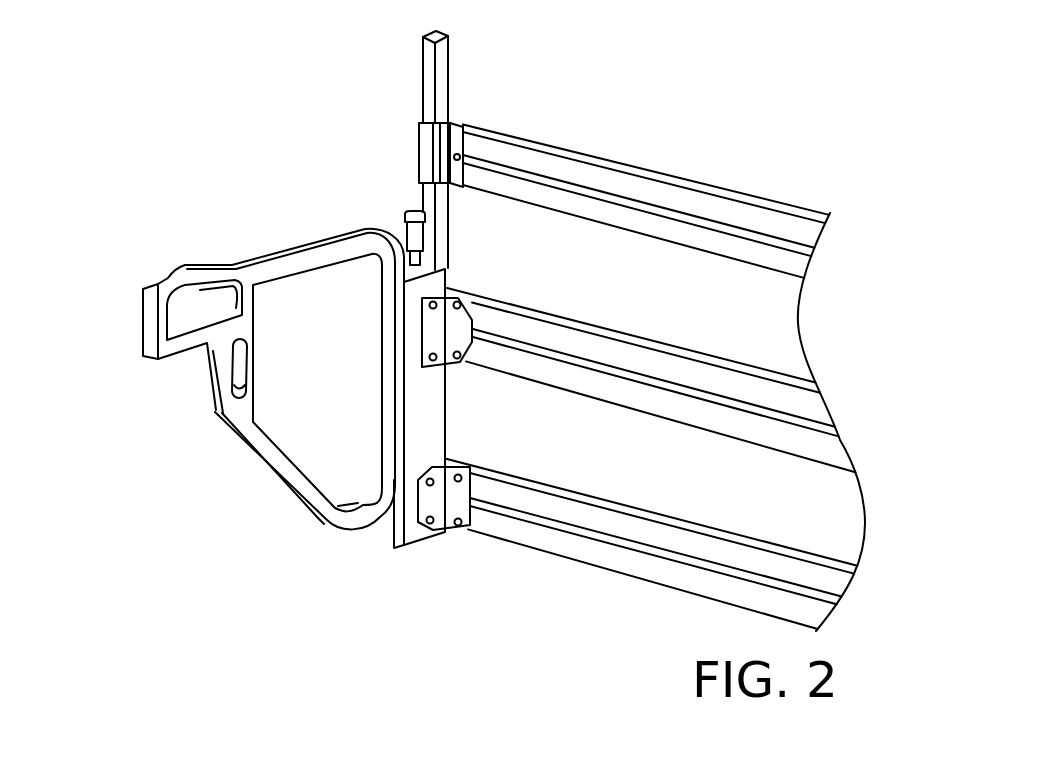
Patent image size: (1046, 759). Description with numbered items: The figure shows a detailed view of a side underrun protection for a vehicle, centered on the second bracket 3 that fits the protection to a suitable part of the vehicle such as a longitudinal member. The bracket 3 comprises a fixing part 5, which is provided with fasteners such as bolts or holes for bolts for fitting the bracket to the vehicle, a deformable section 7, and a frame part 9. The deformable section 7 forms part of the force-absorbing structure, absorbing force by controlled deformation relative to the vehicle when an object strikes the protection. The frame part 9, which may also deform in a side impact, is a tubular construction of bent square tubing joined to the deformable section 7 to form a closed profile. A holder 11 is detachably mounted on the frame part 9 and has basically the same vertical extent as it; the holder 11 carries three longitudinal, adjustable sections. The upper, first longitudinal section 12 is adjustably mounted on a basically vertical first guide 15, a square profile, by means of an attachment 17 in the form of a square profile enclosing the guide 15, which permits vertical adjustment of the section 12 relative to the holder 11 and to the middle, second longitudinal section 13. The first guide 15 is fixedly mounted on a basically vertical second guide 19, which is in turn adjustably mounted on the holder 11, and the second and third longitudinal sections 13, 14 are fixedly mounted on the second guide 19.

The second bracket 3 is at (199, 222).
The fixing part 5 is at (145, 305).
The deformable section 7 is at (192, 400).
The frame part 9 is at (289, 252).
The holder 11 is at (421, 540).
The first longitudinal section 12 is at (502, 150).
The second longitudinal section 13 is at (562, 348).
The third longitudinal section 14 is at (690, 576).
The first guide 15 is at (432, 92).
The attachment 17 is at (428, 157).
The second guide 19 is at (447, 410).